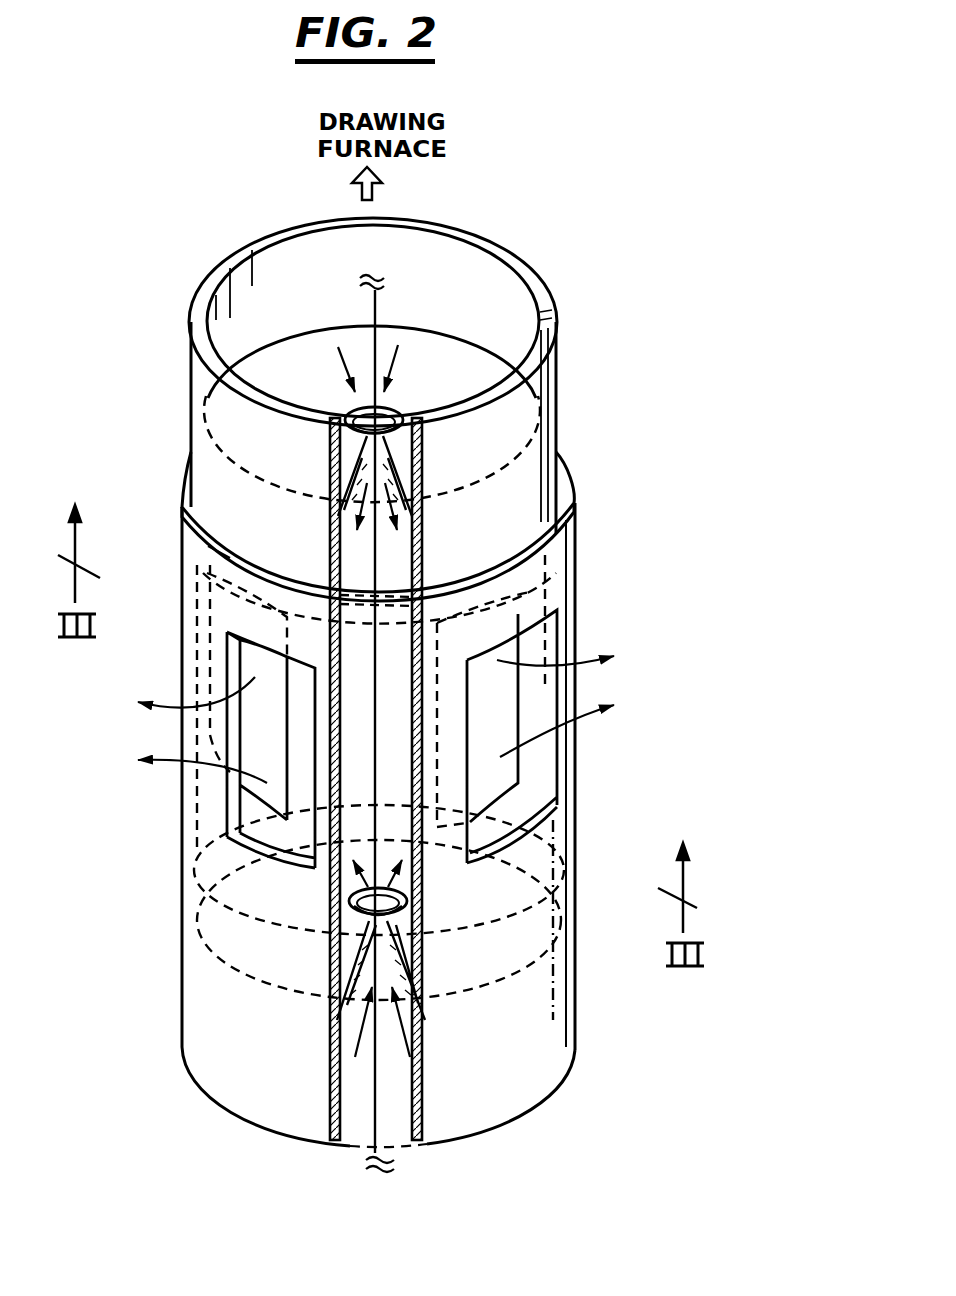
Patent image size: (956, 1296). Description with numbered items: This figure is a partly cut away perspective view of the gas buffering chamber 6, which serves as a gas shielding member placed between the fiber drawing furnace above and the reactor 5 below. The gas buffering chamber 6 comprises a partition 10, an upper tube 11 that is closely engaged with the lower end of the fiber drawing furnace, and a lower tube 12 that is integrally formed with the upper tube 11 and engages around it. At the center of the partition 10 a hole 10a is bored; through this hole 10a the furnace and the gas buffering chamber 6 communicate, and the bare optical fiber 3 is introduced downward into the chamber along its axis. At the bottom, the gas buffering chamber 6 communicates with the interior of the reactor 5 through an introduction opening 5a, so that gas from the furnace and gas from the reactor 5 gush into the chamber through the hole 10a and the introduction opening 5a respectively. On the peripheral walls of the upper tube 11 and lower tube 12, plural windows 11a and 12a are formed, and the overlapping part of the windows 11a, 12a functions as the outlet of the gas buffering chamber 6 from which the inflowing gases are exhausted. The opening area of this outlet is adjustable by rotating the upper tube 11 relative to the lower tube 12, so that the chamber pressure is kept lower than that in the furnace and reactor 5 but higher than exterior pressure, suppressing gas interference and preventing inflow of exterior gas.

The bare optical fiber 3 is at (372, 305).
The reactor 5 is at (318, 1120).
The introduction opening 5a is at (405, 912).
The gas buffering chamber 6 is at (421, 560).
The partition 10 is at (278, 378).
The hole 10a is at (390, 405).
The upper tube 11 is at (210, 483).
The windows 11a is at (203, 592).
The lower tube 12 is at (192, 802).
The windows 12a is at (545, 768).